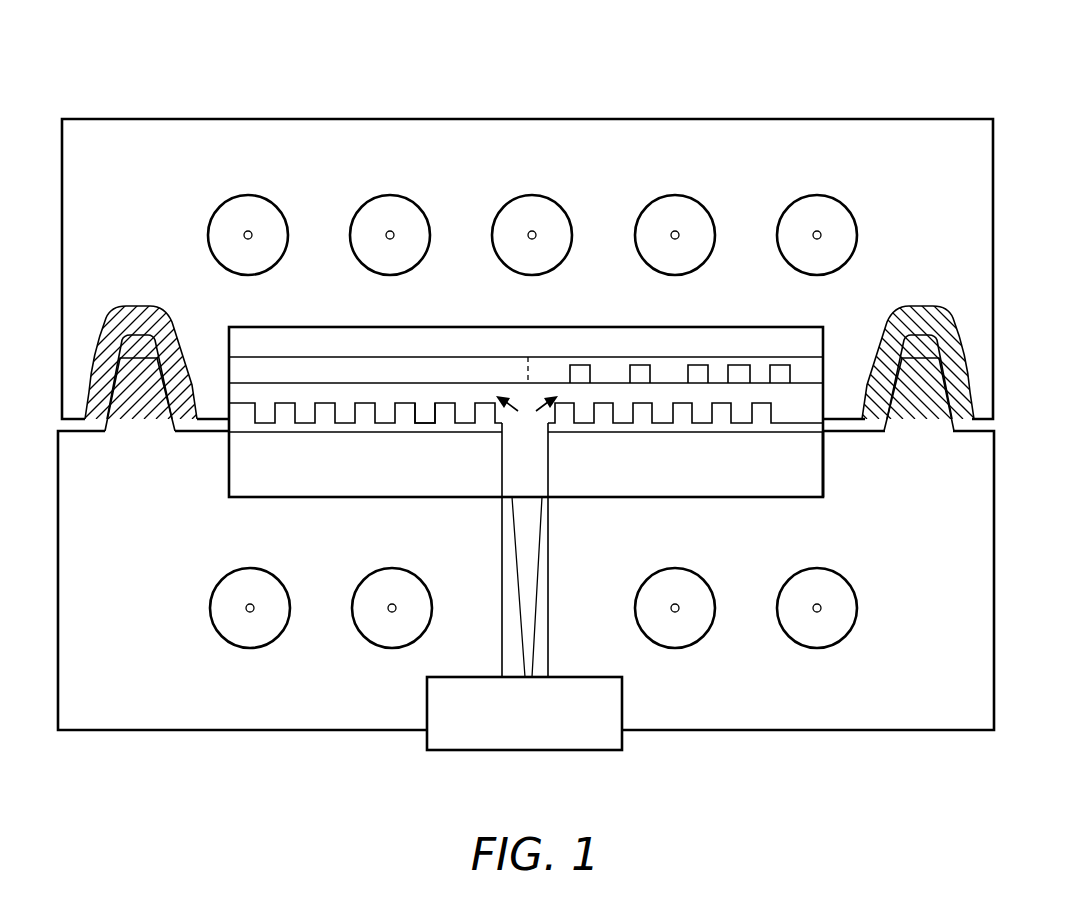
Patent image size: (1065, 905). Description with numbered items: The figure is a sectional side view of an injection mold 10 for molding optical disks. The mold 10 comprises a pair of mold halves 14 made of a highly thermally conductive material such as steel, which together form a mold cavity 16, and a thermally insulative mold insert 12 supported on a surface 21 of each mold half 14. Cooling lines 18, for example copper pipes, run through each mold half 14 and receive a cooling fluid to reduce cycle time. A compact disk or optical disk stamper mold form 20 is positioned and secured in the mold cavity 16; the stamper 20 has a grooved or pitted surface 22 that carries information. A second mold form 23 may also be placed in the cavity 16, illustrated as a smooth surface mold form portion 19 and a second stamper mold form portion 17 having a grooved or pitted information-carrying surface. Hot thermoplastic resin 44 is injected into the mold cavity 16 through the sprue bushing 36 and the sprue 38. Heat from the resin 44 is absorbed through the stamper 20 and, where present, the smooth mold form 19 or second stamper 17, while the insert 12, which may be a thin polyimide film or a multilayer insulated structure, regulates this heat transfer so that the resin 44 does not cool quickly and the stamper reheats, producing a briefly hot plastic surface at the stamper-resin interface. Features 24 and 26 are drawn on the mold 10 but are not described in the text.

The injection mold 10 is at (906, 105).
The mold halves 14 is at (993, 143).
The cooling lines 18 is at (278, 207).
The thermally insulative mold insert 12 is at (312, 345).
The surface 21 is at (420, 327).
The smooth surface mold form 19 is at (237, 370).
The second stamper mold form 17 is at (824, 365).
The stamper mold form 20 is at (243, 415).
The mold cavity 16 is at (428, 400).
The second mold form 23 is at (480, 366).
The patterned layer 24 is at (638, 403).
The grooved or pitted surface 22 is at (786, 422).
The substrate edge 26 is at (823, 482).
The resin 44 is at (527, 398).
The sprue 38 is at (537, 558).
The sprue bushing 36 is at (550, 677).